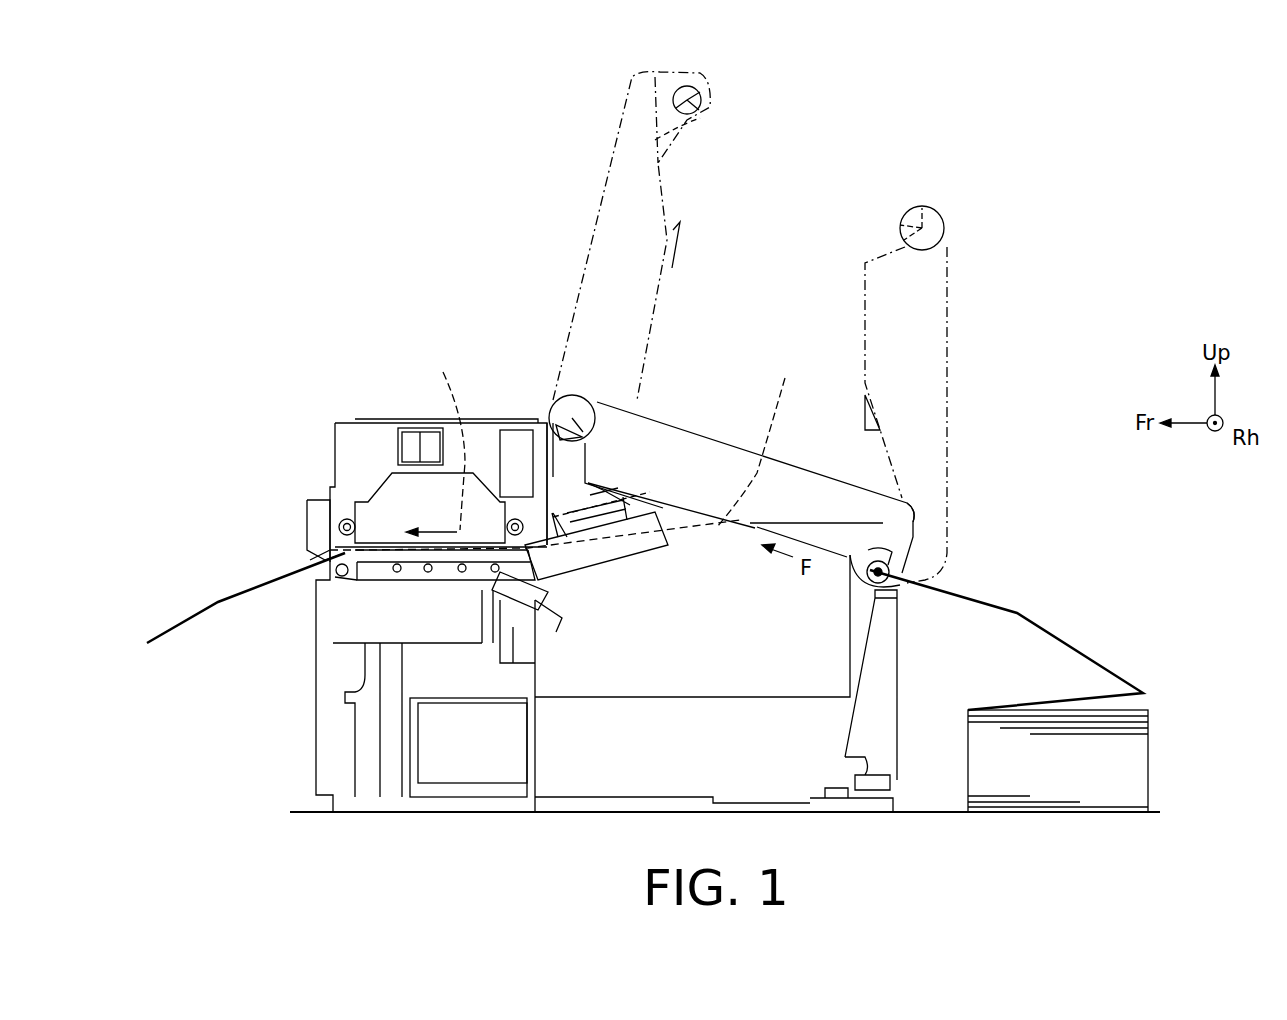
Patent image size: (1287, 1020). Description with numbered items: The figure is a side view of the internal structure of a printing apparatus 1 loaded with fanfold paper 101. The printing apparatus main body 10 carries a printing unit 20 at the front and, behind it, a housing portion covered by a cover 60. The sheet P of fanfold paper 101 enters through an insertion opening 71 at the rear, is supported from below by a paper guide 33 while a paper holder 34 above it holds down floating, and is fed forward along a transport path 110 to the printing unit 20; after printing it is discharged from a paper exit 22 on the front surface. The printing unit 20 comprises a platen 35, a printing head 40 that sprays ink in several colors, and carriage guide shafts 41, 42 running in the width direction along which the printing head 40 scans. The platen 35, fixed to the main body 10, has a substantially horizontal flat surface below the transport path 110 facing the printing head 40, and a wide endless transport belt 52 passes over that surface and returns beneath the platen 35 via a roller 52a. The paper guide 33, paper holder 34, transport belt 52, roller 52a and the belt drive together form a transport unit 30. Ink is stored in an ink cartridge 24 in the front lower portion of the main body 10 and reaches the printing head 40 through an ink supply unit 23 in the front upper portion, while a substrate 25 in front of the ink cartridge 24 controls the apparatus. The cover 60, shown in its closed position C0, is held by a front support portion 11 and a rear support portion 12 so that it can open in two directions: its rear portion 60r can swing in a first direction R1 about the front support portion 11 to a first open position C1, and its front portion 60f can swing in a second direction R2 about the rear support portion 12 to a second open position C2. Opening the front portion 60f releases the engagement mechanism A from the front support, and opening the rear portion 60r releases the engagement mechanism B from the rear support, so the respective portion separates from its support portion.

The printing apparatus 1 is at (985, 206).
The printing apparatus main body 10 is at (405, 408).
The front support portion 11 is at (553, 403).
The rear support portion 12 is at (863, 608).
The printing unit 20 is at (378, 370).
The paper exit 22 is at (290, 546).
The ink supply unit 23 is at (508, 430).
The ink cartridge 24 is at (466, 762).
The substrate 25 is at (375, 745).
The transport unit 30 is at (593, 595).
The paper guide 33 is at (635, 535).
The paper holder 34 is at (600, 513).
The platen 35 is at (378, 560).
The printing head 40 is at (395, 488).
The carriage guide shaft 41 is at (342, 520).
The carriage guide shaft 42 is at (513, 520).
The transport belt 52 is at (340, 578).
The roller 52a is at (332, 567).
The cover 60 is at (707, 437).
The front portion of the cover 60f is at (634, 412).
The rear portion of the cover 60r is at (913, 510).
The insertion opening 71 is at (905, 569).
The fanfold paper 101 is at (1073, 762).
The transport path 110 is at (614, 437).
The engagement mechanism A is at (578, 400).
The engagement mechanism B is at (910, 506).
The closed position C0 is at (795, 465).
The first open position C1 is at (688, 150).
The second open position C2 is at (950, 292).
The sheet P is at (220, 603).
The first direction R1 is at (666, 36).
The second direction R2 is at (952, 140).